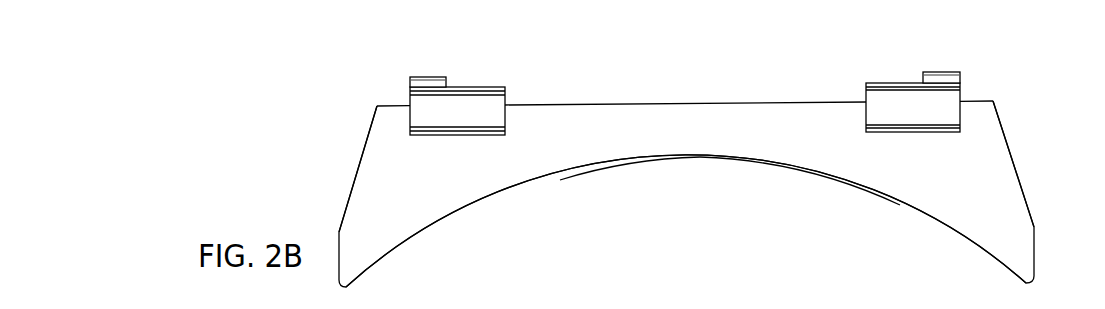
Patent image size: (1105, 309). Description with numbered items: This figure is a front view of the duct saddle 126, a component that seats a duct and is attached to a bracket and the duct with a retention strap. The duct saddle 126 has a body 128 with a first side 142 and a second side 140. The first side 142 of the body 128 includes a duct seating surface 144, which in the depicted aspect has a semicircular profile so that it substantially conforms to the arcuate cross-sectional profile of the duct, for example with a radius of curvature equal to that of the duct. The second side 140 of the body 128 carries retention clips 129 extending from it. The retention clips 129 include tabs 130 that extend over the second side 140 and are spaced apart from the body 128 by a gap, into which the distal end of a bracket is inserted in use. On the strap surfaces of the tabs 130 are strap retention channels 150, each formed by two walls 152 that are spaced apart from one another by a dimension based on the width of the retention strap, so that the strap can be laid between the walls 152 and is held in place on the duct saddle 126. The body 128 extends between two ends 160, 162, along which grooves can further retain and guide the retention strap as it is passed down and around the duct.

The duct saddle 126 is at (1005, 95).
The body 128 is at (725, 140).
The retention clips 129 is at (512, 80).
The tabs 130 is at (469, 88).
The second side 140 is at (696, 100).
The first side 142 is at (644, 180).
The duct seating surface 144 is at (847, 180).
The strap retention channels 150 is at (420, 70).
The walls 152 is at (432, 80).
The end 160 is at (349, 171).
The end 162 is at (1032, 165).